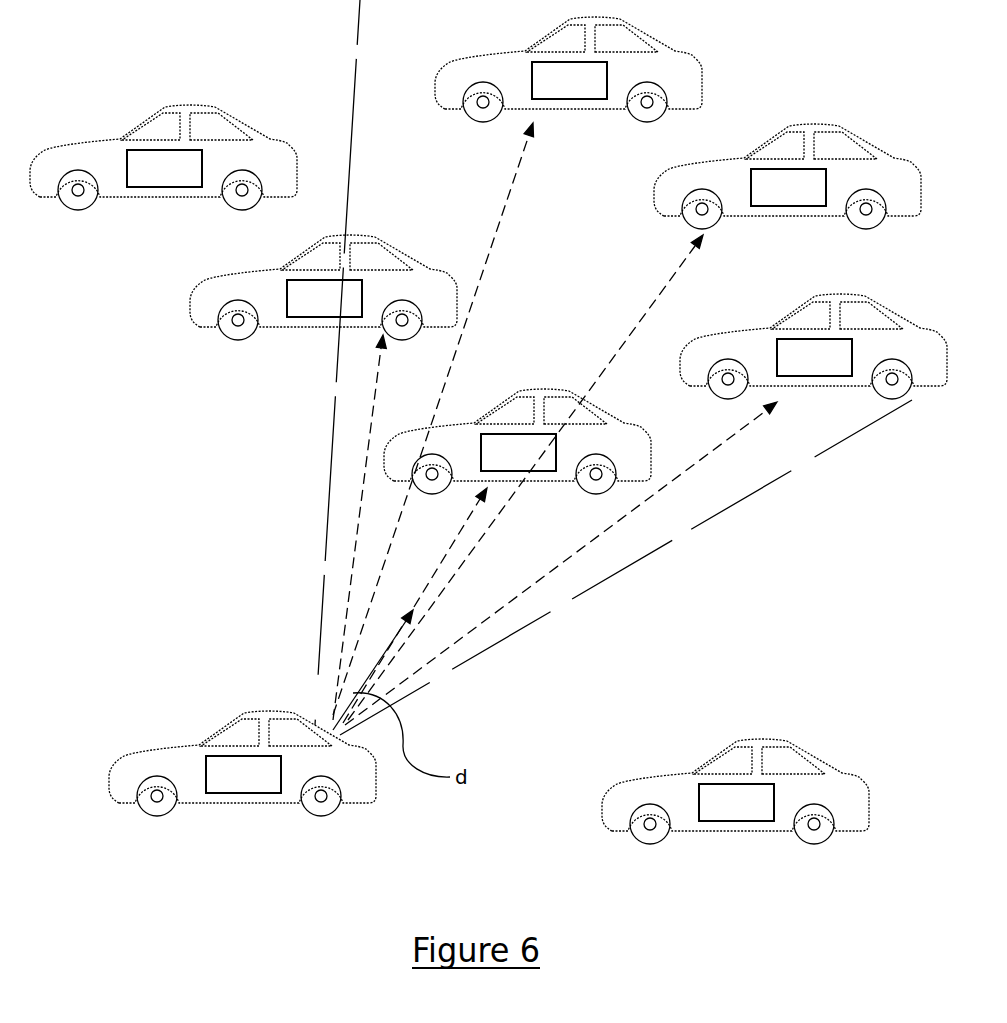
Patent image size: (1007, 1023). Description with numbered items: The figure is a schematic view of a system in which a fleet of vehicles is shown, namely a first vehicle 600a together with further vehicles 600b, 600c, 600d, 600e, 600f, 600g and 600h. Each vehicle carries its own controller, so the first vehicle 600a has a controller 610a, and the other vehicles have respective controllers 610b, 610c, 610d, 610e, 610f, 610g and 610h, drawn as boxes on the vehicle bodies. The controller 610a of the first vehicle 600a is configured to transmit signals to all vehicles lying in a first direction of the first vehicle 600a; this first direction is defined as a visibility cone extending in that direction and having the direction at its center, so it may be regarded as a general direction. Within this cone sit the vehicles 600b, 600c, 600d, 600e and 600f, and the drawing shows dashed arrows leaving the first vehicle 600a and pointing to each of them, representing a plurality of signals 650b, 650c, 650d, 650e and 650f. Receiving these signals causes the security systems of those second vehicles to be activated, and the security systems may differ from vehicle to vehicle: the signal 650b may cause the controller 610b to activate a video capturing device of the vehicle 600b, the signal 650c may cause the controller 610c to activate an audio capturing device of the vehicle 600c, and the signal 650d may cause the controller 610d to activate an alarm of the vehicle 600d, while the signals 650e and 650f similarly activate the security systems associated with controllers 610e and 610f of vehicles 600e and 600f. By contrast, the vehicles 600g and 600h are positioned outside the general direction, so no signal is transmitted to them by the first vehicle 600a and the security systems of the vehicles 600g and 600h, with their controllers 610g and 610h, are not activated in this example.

The first vehicle 600a is at (242, 763).
The vehicle 600b is at (517, 441).
The vehicle 600c is at (813, 346).
The vehicle 600d is at (323, 287).
The vehicle 600e is at (787, 176).
The vehicle 600f is at (568, 69).
The vehicle 600g is at (735, 791).
The vehicle 600h is at (163, 157).
The controller 610a is at (243, 774).
The controller 610b is at (518, 452).
The controller 610c is at (814, 357).
The controller 610d is at (324, 298).
The controller 610e is at (788, 187).
The controller 610f is at (569, 80).
The controller 610g is at (736, 802).
The controller 610h is at (164, 168).
The signal 650b is at (415, 605).
The signal 650c is at (561, 563).
The signal 650d is at (380, 527).
The signal 650e is at (525, 477).
The signal 650f is at (444, 419).